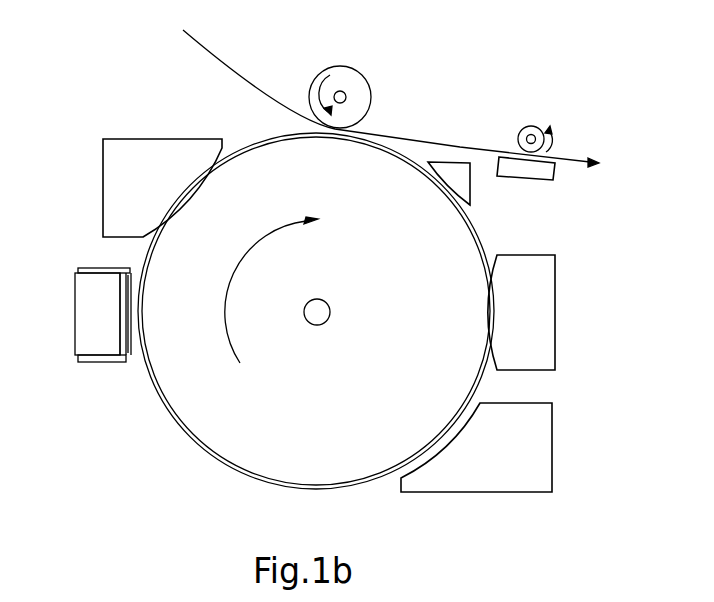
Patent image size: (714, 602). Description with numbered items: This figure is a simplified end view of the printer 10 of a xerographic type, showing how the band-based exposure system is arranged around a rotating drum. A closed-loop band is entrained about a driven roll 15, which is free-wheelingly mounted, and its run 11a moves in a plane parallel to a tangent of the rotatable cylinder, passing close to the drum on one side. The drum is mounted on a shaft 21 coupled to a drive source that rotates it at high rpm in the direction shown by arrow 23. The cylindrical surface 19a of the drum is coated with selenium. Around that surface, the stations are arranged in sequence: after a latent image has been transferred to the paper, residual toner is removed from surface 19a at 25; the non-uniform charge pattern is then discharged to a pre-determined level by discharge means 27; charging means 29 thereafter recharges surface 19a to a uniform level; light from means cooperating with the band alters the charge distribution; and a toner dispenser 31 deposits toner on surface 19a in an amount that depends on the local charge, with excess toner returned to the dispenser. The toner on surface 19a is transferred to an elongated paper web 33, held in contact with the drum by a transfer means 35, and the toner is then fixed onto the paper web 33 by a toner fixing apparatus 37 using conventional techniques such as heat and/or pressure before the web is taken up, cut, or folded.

The printing apparatus 10 is at (101, 82).
The run of band 11a is at (131, 284).
The driven roll 15 is at (84, 268).
The cylindrical surface 19a is at (476, 226).
The shaft 21 is at (329, 300).
The arrow 23 is at (251, 251).
The toner removal location 25 is at (471, 186).
The discharge means 27 is at (552, 255).
The charging means 29 is at (552, 403).
The toner dispenser 31 is at (103, 181).
The paper web 33 is at (207, 49).
The transfer means 35 is at (368, 81).
The toner fixing apparatus 37 is at (520, 108).